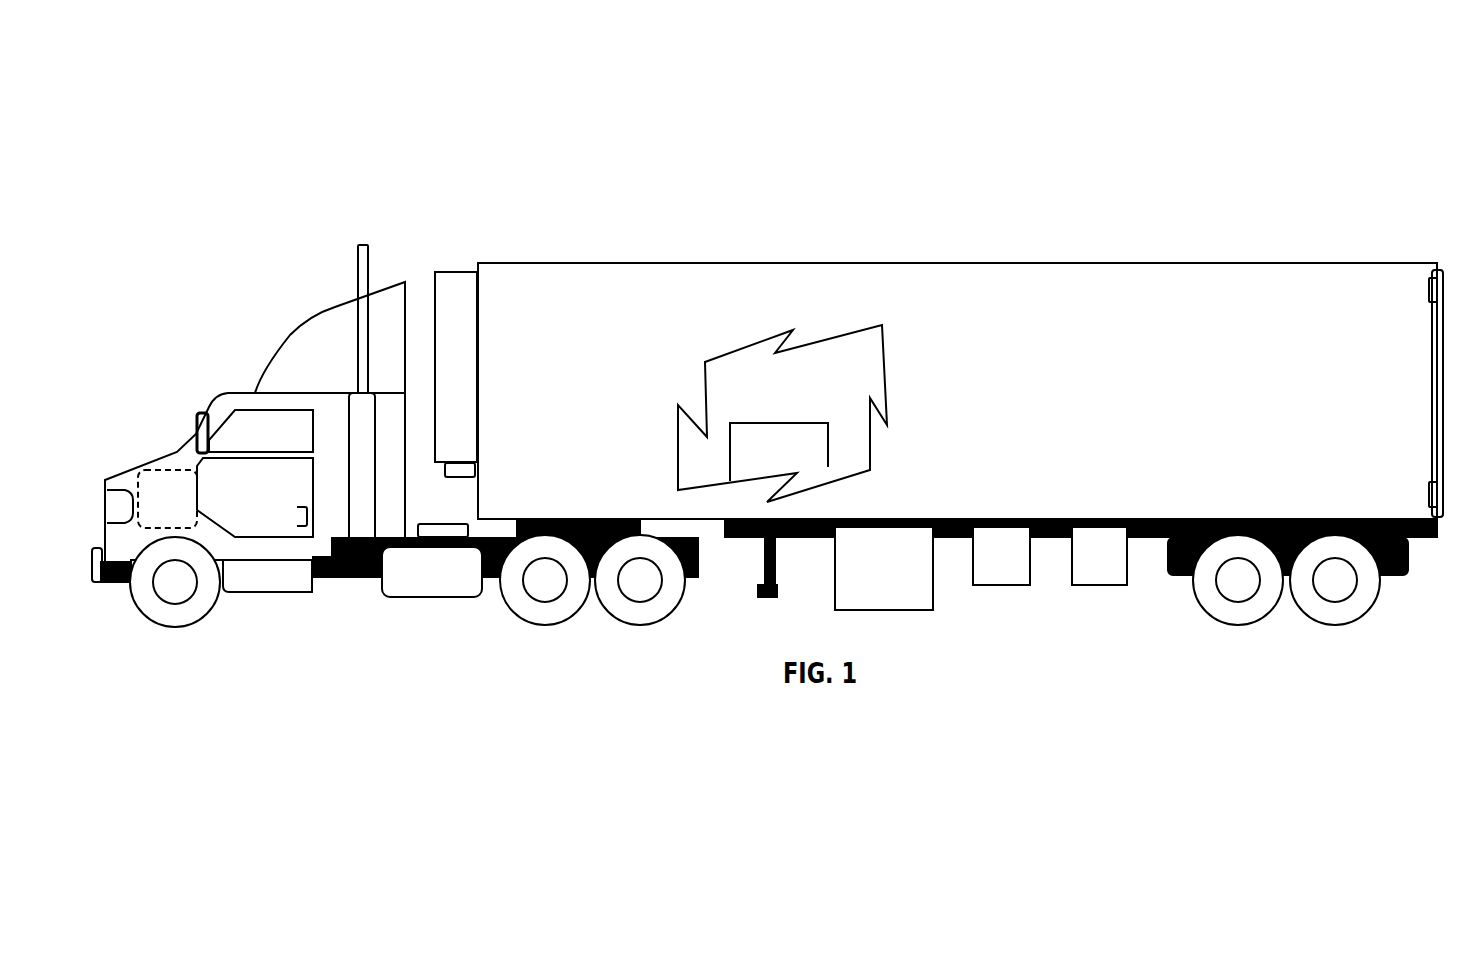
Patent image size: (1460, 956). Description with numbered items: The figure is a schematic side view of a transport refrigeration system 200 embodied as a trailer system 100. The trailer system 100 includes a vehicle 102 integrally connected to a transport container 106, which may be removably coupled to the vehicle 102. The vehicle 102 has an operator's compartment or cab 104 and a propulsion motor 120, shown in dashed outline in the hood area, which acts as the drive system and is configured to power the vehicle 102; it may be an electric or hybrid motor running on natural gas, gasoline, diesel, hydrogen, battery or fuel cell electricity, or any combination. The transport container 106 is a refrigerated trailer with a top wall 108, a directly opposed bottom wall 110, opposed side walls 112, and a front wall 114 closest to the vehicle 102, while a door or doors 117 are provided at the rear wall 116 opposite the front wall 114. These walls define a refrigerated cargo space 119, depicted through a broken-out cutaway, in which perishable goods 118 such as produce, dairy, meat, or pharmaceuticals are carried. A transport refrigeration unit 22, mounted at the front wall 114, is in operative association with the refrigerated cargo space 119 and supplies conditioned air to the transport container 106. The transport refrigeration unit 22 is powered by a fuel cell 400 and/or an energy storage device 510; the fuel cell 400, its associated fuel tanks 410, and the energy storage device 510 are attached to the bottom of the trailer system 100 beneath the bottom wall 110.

The trailer system 100 is at (362, 134).
The transport refrigeration system 200 is at (468, 228).
The transport refrigeration unit 22 is at (433, 295).
The vehicle 102 is at (117, 583).
The cab 104 is at (238, 428).
The propulsion motor 120 is at (152, 470).
The transport container 106 is at (1212, 275).
The top wall 108 is at (648, 263).
The front wall 114 is at (478, 408).
The bottom wall 110 is at (1010, 519).
The side walls 112 is at (807, 397).
The rear wall 116 is at (1437, 337).
The doors 117 is at (1437, 400).
The perishable goods 118 is at (730, 445).
The refrigerated cargo space 119 is at (858, 372).
The energy storage device 510 is at (903, 610).
The fuel cell 400 is at (1000, 585).
The fuel tanks 410 is at (1097, 585).